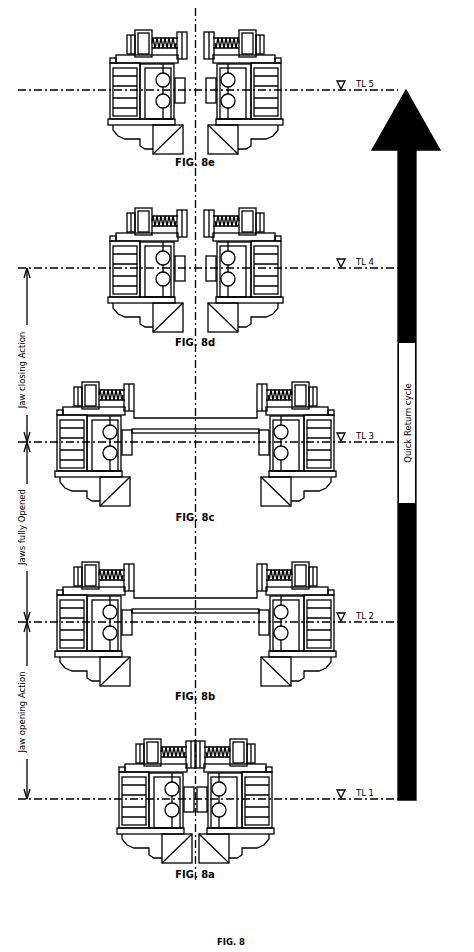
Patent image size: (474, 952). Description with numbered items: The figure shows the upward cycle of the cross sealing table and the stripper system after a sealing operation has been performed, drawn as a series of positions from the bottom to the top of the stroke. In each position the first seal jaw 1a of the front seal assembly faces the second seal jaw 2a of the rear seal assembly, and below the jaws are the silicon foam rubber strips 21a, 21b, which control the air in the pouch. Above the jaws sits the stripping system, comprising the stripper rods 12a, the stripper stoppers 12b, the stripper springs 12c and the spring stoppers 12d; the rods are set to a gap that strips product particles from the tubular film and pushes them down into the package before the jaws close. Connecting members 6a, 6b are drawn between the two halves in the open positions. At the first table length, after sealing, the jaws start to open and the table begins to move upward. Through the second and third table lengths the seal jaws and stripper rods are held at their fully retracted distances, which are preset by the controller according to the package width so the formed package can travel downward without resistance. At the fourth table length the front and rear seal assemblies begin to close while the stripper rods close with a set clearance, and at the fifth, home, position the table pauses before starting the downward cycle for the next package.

In FIG. 8e, the stripper rod 12a is at (195, 56).
In FIG. 8d, the stripper rod 12a is at (195, 232).
In FIG. 8c, the stripper rod 12a is at (255, 406).
In FIG. 8b, the stripper rod 12a is at (255, 586).
In FIG. 8a, the stripper rod 12a is at (196, 764).
In FIG. 8e, the stripper stopper 12b is at (207, 32).
In FIG. 8d, the stripper stopper 12b is at (207, 210).
In FIG. 8c, the stripper stopper 12b is at (261, 384).
In FIG. 8b, the stripper stopper 12b is at (261, 564).
In FIG. 8a, the stripper stopper 12b is at (202, 741).
In FIG. 8e, the stripper spring 12c is at (246, 31).
In FIG. 8d, the stripper spring 12c is at (246, 209).
In FIG. 8c, the stripper spring 12c is at (296, 382).
In FIG. 8b, the stripper spring 12c is at (296, 562).
In FIG. 8a, the stripper spring 12c is at (235, 739).
In FIG. 8e, the spring stopper 12d is at (260, 35).
In FIG. 8d, the spring stopper 12d is at (260, 213).
In FIG. 8c, the spring stopper 12d is at (314, 387).
In FIG. 8b, the spring stopper 12d is at (314, 567).
In FIG. 8a, the spring stopper 12d is at (253, 744).
In FIG. 8e, the connecting link 6a is at (195, 88).
In FIG. 8d, the connecting link 6a is at (195, 265).
In FIG. 8c, the connecting link 6a is at (195, 431).
In FIG. 8b, the connecting link 6a is at (195, 611).
In FIG. 8a, the connecting link 6a is at (203, 792).
In FIG. 8c, the lower connecting link 6b is at (195, 426).
In FIG. 8b, the lower connecting link 6b is at (195, 606).
In FIG. 8e, the first seal jaw 1a is at (113, 127).
In FIG. 8d, the first seal jaw 1a is at (113, 305).
In FIG. 8c, the first seal jaw 1a is at (60, 479).
In FIG. 8b, the first seal jaw 1a is at (60, 659).
In FIG. 8a, the first seal jaw 1a is at (122, 836).
In FIG. 8e, the second seal jaw 2a is at (278, 127).
In FIG. 8d, the second seal jaw 2a is at (278, 305).
In FIG. 8c, the second seal jaw 2a is at (331, 479).
In FIG. 8b, the second seal jaw 2a is at (331, 659).
In FIG. 8a, the second seal jaw 2a is at (269, 836).
In FIG. 8e, the silicon foam rubber strip 21a is at (155, 150).
In FIG. 8d, the silicon foam rubber strip 21a is at (155, 328).
In FIG. 8c, the silicon foam rubber strip 21a is at (101, 505).
In FIG. 8b, the silicon foam rubber strip 21a is at (101, 685).
In FIG. 8a, the silicon foam rubber strip 21a is at (164, 859).
In FIG. 8e, the silicon foam rubber strip 21b is at (236, 150).
In FIG. 8d, the silicon foam rubber strip 21b is at (236, 328).
In FIG. 8c, the silicon foam rubber strip 21b is at (290, 505).
In FIG. 8b, the silicon foam rubber strip 21b is at (290, 685).
In FIG. 8a, the silicon foam rubber strip 21b is at (227, 859).